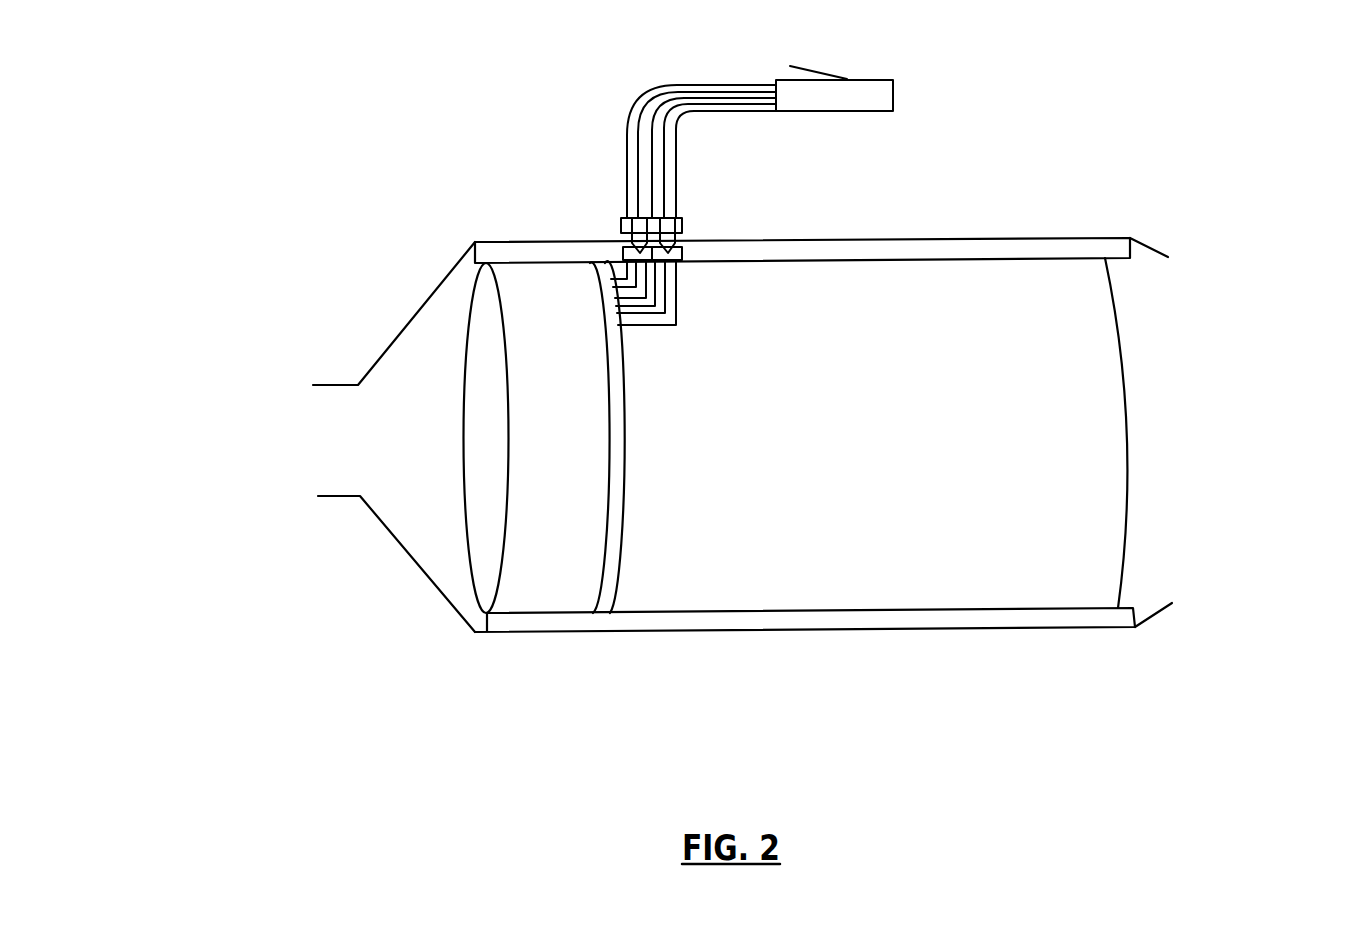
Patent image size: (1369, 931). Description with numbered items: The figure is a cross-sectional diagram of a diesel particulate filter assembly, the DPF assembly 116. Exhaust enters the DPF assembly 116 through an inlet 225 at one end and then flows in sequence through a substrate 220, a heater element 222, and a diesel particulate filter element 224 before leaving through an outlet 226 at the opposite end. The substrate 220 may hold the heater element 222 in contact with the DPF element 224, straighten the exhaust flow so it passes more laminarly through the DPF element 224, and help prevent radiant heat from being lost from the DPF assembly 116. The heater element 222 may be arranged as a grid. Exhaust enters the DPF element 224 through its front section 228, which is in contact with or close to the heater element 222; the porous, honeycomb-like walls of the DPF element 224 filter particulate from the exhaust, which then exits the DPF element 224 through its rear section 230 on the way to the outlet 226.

The DPF assembly 116 is at (168, 82).
The substrate 220 is at (487, 439).
The heater element 222 is at (612, 560).
The diesel particulate filter element 224 is at (930, 575).
The inlet 225 is at (297, 437).
The outlet 226 is at (1235, 422).
The front section 228 is at (632, 435).
The rear section 230 is at (1112, 435).